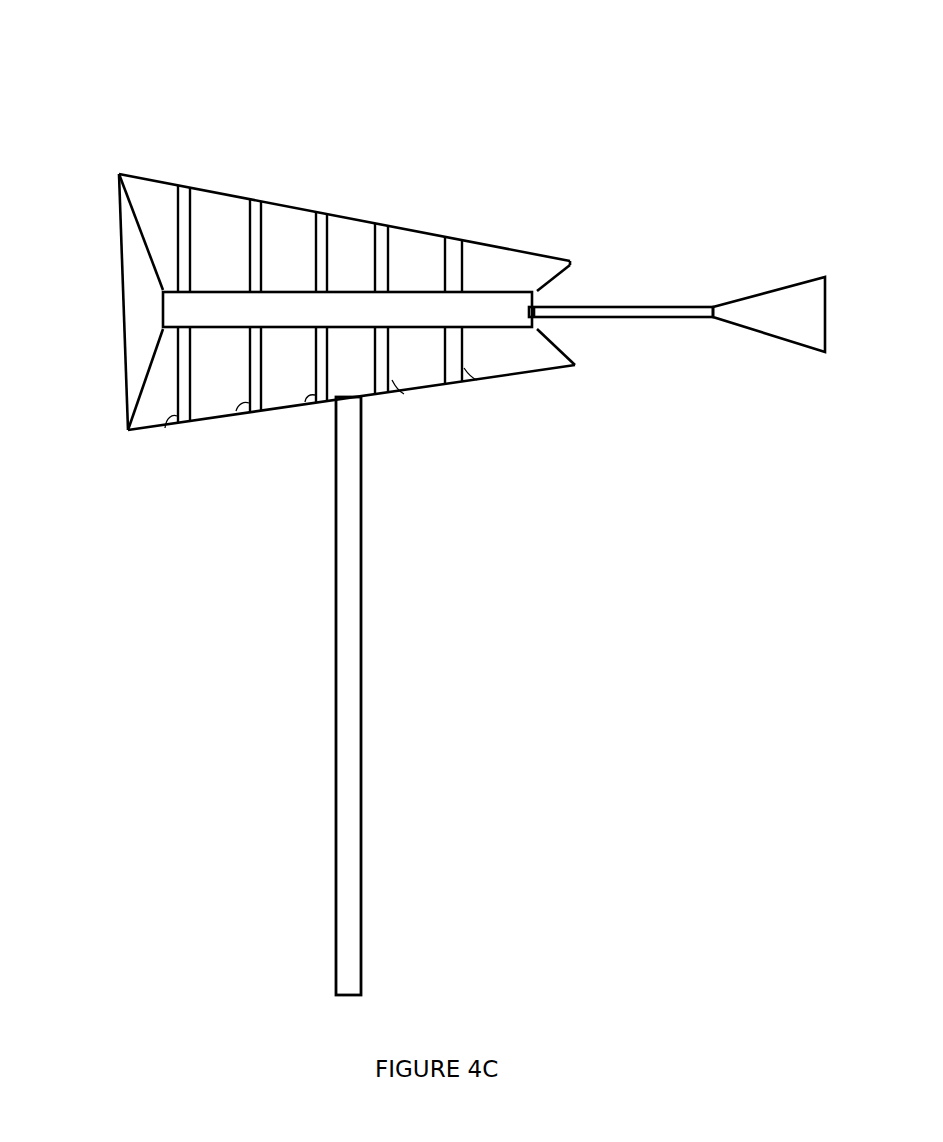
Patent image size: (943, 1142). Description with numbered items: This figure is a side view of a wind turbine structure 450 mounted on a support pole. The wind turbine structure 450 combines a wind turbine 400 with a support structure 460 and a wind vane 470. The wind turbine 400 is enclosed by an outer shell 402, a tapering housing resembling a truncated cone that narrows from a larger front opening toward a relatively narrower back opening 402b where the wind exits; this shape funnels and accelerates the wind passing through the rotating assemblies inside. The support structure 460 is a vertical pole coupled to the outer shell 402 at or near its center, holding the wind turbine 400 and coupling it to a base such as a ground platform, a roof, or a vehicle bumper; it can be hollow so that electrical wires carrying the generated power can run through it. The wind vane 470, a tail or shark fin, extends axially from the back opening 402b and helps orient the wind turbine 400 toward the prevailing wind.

The wind turbine structure 450 is at (208, 86).
The wind turbine 400 is at (106, 199).
The outer shell 402 is at (352, 216).
The back opening 402b is at (570, 247).
The wind vane 470 is at (790, 283).
The support structure 460 is at (333, 752).